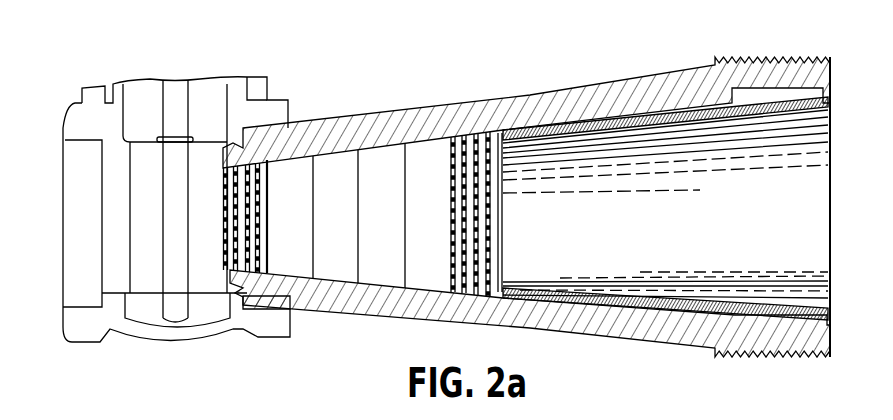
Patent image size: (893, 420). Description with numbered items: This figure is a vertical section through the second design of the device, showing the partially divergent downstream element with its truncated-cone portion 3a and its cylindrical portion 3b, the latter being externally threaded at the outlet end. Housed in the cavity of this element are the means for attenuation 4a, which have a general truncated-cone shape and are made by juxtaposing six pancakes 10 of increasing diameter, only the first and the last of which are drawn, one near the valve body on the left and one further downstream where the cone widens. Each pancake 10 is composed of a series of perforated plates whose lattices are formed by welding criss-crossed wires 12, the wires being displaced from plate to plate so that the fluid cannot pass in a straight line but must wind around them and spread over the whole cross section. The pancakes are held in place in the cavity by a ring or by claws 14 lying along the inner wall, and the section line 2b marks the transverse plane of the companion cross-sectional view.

The section line 2b- 2b is at (40, 248).
The truncated-cone portion 3a is at (617, 97).
The cylindrical portion 3b is at (765, 58).
The means for attenuation 4a is at (385, 157).
The pancake 10 is at (332, 167).
The criss-crossed wire 12 is at (438, 303).
The ring or claws 14 is at (643, 305).